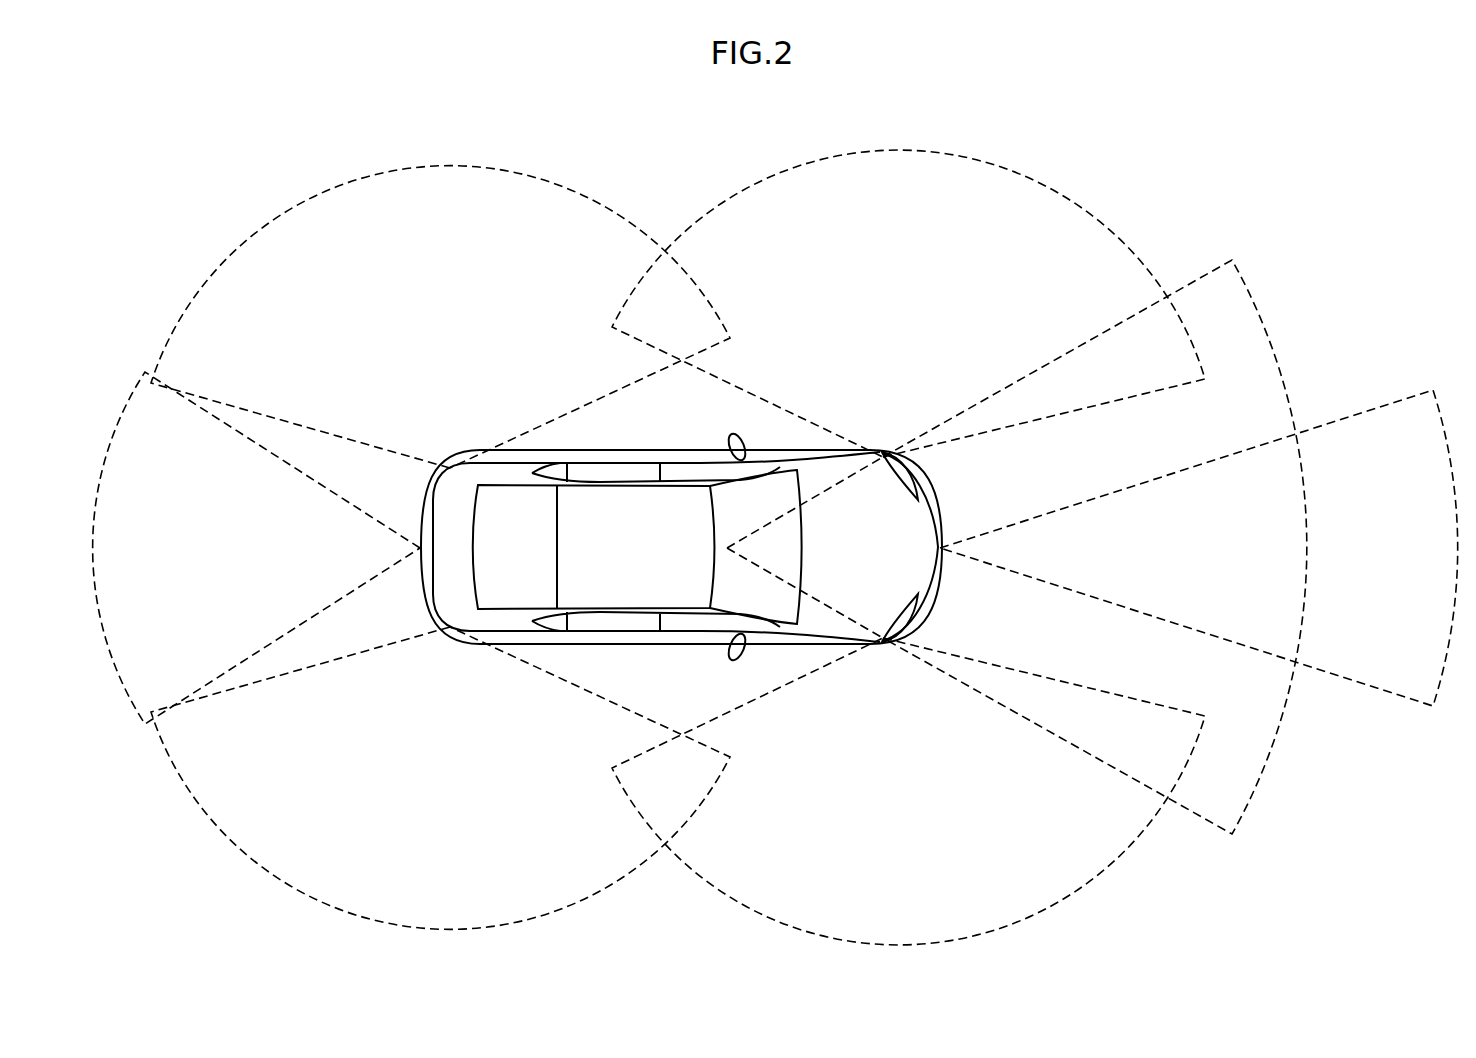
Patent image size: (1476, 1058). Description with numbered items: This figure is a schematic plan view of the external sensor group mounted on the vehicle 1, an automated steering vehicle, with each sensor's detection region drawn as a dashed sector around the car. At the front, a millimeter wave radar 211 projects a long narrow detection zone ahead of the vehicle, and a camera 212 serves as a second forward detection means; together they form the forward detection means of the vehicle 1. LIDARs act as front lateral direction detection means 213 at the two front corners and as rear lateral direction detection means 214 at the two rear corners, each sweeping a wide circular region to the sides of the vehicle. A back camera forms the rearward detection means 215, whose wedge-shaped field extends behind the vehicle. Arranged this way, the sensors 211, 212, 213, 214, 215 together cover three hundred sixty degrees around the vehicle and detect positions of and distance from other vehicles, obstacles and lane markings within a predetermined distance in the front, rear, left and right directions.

The vehicle 1 is at (623, 517).
The millimeter wave radar 211 is at (1393, 403).
The camera 212 is at (1263, 317).
The front lateral direction detection means 213 is at (1077, 205).
The rear lateral direction detection means 214 is at (257, 230).
The rearward detection means 215 is at (130, 392).